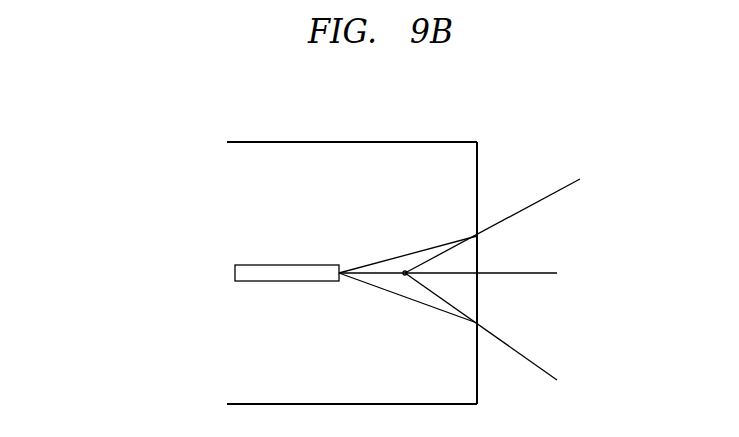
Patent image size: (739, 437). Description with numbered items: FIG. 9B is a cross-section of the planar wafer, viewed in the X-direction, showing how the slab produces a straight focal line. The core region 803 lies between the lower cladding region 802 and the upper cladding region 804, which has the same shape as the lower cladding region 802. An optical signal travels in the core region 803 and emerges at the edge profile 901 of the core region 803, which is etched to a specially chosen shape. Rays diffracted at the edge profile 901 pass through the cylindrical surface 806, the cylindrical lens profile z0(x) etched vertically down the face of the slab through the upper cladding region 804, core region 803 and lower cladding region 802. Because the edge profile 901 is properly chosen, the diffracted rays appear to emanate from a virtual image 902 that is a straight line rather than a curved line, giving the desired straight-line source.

The lower cladding region 802 is at (237, 344).
The core region 803 is at (231, 272).
The upper cladding region 804 is at (237, 204).
The cylindrical surface 806 is at (477, 157).
The edge profile 901 is at (346, 268).
The virtual image 902 is at (404, 275).